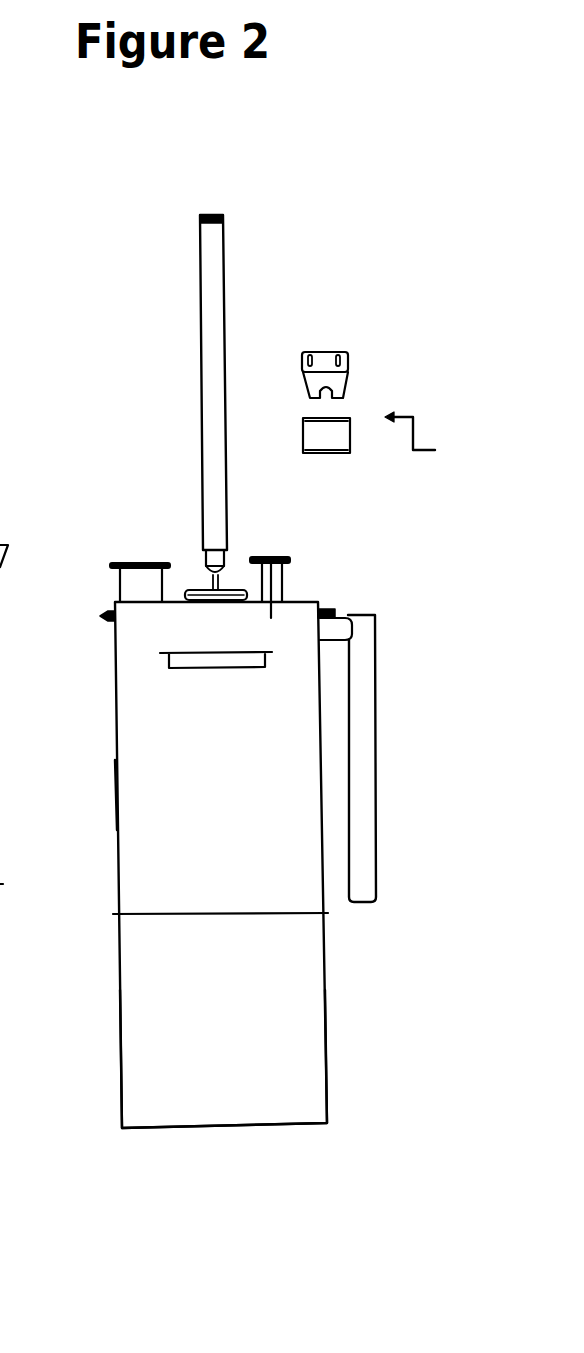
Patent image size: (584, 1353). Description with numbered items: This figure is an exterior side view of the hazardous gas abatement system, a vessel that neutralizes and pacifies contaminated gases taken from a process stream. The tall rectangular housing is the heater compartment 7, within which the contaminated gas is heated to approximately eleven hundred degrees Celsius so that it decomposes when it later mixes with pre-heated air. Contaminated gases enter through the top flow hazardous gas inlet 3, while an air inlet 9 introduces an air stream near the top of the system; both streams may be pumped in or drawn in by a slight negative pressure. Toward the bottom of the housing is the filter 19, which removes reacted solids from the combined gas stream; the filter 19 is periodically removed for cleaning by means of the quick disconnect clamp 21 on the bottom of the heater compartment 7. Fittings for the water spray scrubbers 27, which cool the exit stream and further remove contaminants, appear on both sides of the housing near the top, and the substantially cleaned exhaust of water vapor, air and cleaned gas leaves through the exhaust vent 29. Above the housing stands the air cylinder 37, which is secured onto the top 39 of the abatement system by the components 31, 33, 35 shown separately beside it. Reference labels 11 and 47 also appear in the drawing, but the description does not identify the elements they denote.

The hazardous gas inlet 3 is at (267, 557).
The heater compartment 7 is at (325, 893).
The air inlet 9 is at (378, 792).
The housing wall 11 is at (20, 900).
The filter 19 is at (323, 1025).
The quick disconnect clamp 21 is at (118, 915).
The water spray scrubbers 27 is at (98, 615).
The exhaust vent 29 is at (143, 563).
The component 31 is at (348, 358).
The component 33 is at (413, 417).
The component 35 is at (332, 455).
The air cylinder 37 is at (200, 297).
The top 39 is at (198, 591).
The device 47 is at (100, 793).